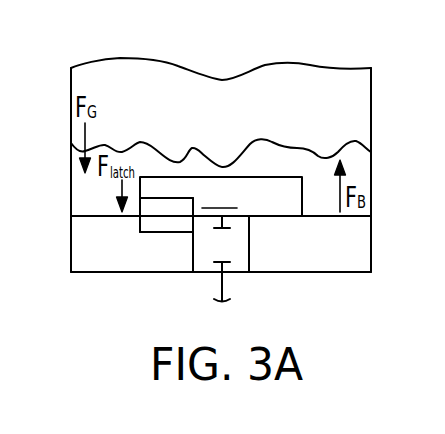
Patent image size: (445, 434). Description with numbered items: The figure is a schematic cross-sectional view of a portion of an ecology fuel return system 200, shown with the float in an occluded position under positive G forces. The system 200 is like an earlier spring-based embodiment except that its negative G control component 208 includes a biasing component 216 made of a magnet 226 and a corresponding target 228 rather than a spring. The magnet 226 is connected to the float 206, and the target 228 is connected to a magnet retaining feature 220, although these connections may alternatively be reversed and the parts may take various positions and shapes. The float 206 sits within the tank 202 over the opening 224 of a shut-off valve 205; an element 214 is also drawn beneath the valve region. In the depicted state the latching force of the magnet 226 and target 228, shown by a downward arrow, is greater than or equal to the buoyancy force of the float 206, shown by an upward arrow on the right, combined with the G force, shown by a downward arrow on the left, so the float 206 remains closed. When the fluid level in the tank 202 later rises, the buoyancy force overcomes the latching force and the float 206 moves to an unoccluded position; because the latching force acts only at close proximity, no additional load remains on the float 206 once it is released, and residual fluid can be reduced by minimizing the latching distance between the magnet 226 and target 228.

The ecology fuel return system 200 is at (292, 97).
The tank 202 is at (372, 120).
The shut-off valve 205 is at (262, 228).
The float 206 is at (221, 204).
The negative G control component 208 is at (103, 207).
The connector 214 is at (232, 273).
The biasing component 216 is at (118, 245).
The magnet retaining feature 220 is at (317, 216).
The opening 224 is at (250, 215).
The magnet 226 is at (160, 207).
The target 228 is at (160, 227).